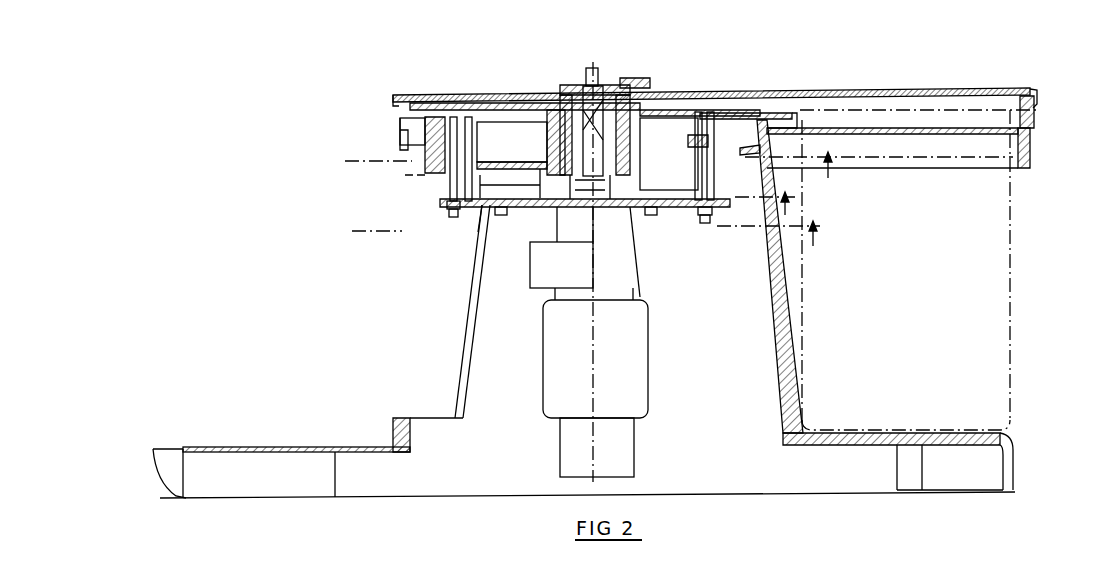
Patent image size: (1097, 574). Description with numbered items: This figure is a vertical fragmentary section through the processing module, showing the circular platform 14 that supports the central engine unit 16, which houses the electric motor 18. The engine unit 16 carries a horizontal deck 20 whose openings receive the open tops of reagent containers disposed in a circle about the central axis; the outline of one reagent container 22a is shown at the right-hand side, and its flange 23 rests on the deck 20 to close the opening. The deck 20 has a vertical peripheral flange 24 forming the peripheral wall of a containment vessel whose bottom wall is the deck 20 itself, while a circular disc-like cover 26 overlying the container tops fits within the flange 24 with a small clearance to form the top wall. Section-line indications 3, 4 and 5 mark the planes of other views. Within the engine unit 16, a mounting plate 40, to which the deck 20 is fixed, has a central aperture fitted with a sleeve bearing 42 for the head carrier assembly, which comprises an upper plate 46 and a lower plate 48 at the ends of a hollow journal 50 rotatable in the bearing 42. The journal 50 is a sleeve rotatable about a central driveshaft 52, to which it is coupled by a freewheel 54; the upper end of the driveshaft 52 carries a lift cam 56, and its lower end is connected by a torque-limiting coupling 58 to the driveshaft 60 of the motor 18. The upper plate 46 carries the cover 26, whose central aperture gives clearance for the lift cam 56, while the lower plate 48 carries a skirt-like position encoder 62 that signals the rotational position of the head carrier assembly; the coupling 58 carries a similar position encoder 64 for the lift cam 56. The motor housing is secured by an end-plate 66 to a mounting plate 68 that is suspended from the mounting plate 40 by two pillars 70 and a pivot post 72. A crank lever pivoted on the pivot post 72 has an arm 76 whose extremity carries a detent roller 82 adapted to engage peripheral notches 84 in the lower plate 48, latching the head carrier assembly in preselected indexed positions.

The circular platform 14 is at (280, 447).
The central engine unit 16 is at (788, 328).
The electric motor 18 is at (641, 362).
The horizontal deck 20 is at (798, 128).
The reagent container 22a is at (1013, 268).
The flange 23 is at (1042, 108).
The vertical peripheral flange 24 is at (1030, 160).
The circular disc-like cover 26 is at (826, 90).
The dimension level 3 is at (774, 239).
The dimension level 4 is at (766, 209).
The dimension level 5 is at (834, 172).
The mounting plate 40 is at (510, 120).
The sleeve bearing 42 is at (549, 149).
The upper plate 46 is at (538, 96).
The lower plate 48 is at (500, 158).
The hollow journal 50 is at (550, 100).
The central driveshaft 52 is at (578, 86).
The freewheel 54 is at (608, 100).
The lift cam 56 is at (645, 78).
The torque-limiting coupling 58 is at (652, 196).
The driveshaft 60 is at (596, 207).
The position encoder 62 is at (478, 232).
The position encoder 64 is at (520, 209).
The end-plate 66 is at (660, 208).
The mounting plate 68 is at (522, 209).
The pillars 70 is at (456, 188).
The pivot post 72 is at (722, 113).
The lever arm 76 is at (710, 145).
The detent roller 82 is at (686, 158).
The peripheral notches 84 is at (452, 162).